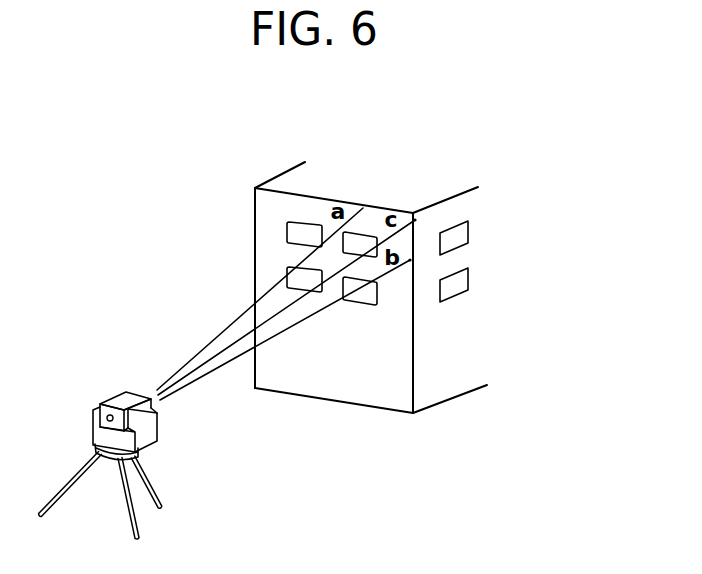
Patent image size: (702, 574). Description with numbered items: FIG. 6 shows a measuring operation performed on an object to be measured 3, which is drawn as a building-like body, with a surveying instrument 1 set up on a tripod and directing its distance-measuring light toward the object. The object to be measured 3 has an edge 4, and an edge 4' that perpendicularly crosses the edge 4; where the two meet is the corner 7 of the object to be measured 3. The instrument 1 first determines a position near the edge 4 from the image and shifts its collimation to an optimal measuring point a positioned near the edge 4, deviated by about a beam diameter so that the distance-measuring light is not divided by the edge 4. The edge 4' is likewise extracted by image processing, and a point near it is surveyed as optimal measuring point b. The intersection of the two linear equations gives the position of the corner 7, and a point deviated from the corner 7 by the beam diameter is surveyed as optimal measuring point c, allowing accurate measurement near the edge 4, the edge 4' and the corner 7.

The laser surveying instrument on tripod 1 is at (108, 383).
The object to be measured 3 is at (438, 405).
The edge 4 is at (334, 244).
The edge 4' is at (485, 244).
The corner 7 is at (415, 213).